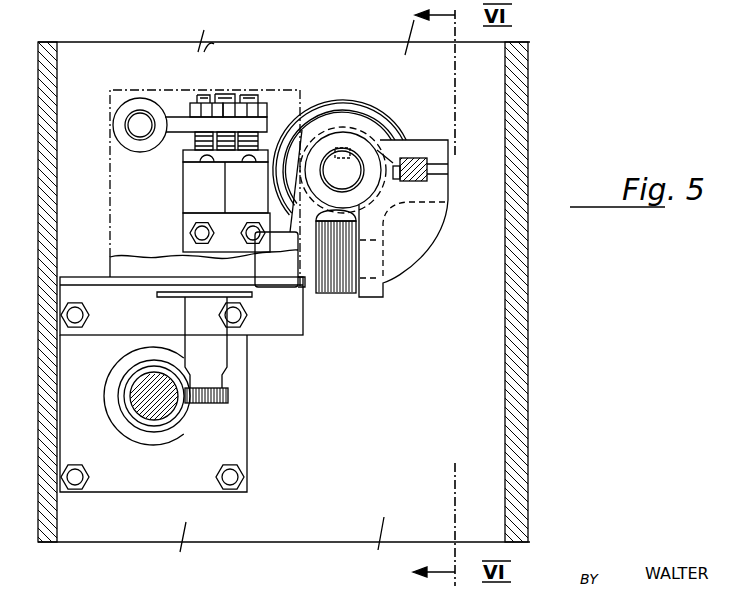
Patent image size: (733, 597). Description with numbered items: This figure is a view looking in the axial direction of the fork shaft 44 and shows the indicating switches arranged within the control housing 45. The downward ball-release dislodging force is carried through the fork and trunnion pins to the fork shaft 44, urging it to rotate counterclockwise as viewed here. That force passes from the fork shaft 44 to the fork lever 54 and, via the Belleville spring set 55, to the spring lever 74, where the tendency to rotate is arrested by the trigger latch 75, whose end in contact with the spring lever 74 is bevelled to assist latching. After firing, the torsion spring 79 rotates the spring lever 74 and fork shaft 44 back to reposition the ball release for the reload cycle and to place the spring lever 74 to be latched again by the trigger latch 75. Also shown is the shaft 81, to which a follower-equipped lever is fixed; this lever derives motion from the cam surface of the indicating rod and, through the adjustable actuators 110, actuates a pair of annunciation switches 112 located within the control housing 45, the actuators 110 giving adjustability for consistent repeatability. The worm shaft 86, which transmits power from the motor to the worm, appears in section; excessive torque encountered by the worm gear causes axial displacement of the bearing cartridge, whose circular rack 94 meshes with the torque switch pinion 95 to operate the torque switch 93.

The fork shaft 44 is at (348, 168).
The control housing 45 is at (517, 392).
The fork lever 54 is at (312, 300).
The Belleville spring set 55 is at (341, 285).
The spring lever 74 is at (438, 210).
The trigger latch 75 is at (428, 173).
The torsion spring 79 is at (332, 115).
The shaft 81 is at (143, 118).
The worm shaft 86 is at (148, 400).
The torque switch 93 is at (120, 258).
The circular rack 94 is at (128, 385).
The torque switch pinion 95 is at (230, 398).
The adjustable actuators 110 is at (256, 99).
The annunciation switches 112 is at (212, 187).